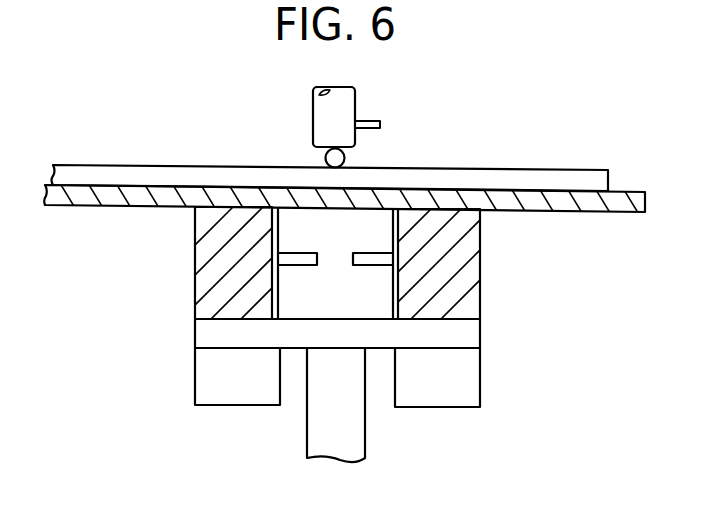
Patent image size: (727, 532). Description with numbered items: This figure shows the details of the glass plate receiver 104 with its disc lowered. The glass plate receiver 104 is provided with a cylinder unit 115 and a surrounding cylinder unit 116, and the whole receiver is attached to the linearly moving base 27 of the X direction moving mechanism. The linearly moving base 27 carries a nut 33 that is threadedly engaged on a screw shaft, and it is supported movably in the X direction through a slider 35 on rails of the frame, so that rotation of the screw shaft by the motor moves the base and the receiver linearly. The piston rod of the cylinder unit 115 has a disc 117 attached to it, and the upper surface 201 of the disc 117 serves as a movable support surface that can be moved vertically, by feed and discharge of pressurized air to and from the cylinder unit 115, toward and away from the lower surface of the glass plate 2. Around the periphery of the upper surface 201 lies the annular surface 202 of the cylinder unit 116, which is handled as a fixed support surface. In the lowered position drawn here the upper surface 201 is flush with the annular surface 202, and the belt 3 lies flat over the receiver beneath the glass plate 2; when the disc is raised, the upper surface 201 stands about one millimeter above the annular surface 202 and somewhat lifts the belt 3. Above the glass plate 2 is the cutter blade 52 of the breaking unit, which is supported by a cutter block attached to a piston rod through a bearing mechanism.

The glass plate 2 is at (552, 179).
The belt 3 is at (577, 212).
The linearly moving base 27 is at (468, 338).
The nut 33 is at (357, 428).
The slider 35 is at (202, 383).
The cutter blade 52 is at (345, 161).
The glass plate receiver 104 is at (181, 240).
The cylinder unit 115 is at (378, 290).
The cylinder unit 116 is at (208, 283).
The disc 117 is at (293, 220).
The upper surface 201 is at (376, 192).
The annular surface 202 is at (230, 209).